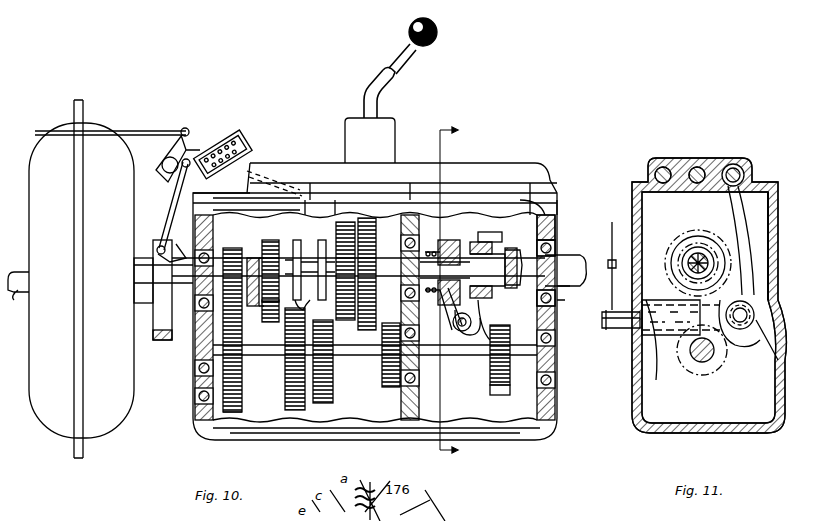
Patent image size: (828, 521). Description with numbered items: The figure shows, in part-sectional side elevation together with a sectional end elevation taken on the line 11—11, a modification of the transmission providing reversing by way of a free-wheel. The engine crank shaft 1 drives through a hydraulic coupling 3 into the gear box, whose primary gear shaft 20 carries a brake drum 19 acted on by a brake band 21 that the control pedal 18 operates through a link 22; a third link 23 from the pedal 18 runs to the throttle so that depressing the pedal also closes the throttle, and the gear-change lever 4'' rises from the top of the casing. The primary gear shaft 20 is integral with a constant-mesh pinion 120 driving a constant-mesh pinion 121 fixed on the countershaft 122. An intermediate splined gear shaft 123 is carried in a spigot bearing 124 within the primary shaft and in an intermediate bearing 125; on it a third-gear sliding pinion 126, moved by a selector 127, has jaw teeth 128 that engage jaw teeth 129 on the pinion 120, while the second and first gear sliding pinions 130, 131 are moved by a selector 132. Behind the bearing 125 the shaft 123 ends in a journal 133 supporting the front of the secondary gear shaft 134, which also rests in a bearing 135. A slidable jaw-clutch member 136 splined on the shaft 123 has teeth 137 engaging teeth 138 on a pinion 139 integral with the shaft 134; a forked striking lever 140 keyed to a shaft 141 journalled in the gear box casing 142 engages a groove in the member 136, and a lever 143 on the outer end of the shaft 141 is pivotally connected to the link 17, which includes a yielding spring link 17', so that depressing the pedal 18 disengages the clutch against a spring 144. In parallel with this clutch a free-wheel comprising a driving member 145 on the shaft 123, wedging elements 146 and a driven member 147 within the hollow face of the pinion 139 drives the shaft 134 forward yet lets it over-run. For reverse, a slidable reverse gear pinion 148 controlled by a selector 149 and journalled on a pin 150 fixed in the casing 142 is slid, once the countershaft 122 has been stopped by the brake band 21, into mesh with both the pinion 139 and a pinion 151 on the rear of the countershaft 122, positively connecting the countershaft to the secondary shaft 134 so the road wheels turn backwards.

In FIG. 10, the crank shaft 1 is at (14, 300).
In FIG. 10, the hydraulic coupling 3 is at (104, 432).
In FIG. 10, the shift lever 4'' is at (395, 90).
In FIG. 10, the section line 11 is at (458, 289).
In FIG. 10, the link 17 is at (274, 169).
In FIG. 10, the spring link 17' is at (225, 150).
In FIG. 10, the control pedal 18 is at (182, 130).
In FIG. 10, the brake drum 19 is at (168, 310).
In FIG. 10, the primary gear shaft 20 is at (145, 292).
In FIG. 10, the brake band 21 is at (163, 342).
In FIG. 10, the link 22 is at (178, 203).
In FIG. 10, the third link 23 is at (152, 131).
In FIG. 10, the constant-mesh pinion 120 is at (232, 248).
In FIG. 10, the constant-mesh pinion 121 is at (242, 405).
In FIG. 10, the countershaft 122 is at (285, 372).
In FIG. 11, the countershaft 122 is at (702, 362).
In FIG. 10, the intermediate splined gear shaft 123 is at (308, 242).
In FIG. 11, the intermediate splined gear shaft 123 is at (688, 258).
In FIG. 10, the spigot bearing 124 is at (270, 322).
In FIG. 10, the intermediate bearing 125 is at (412, 183).
In FIG. 10, the third-gear sliding pinion 126 is at (275, 235).
In FIG. 10, the selector 127 is at (305, 183).
In FIG. 11, the selector 127 is at (662, 167).
In FIG. 10, the jaw teeth 128 is at (240, 196).
In FIG. 10, the jaw teeth 129 is at (266, 336).
In FIG. 10, the second gear sliding pinion 130 is at (344, 222).
In FIG. 10, the first gear sliding pinion 131 is at (366, 218).
In FIG. 10, the selector 132 is at (336, 183).
In FIG. 11, the selector 132 is at (699, 167).
In FIG. 10, the journal 133 is at (545, 270).
In FIG. 10, the secondary gear shaft 134 is at (568, 296).
In FIG. 10, the bearing 135 is at (555, 310).
In FIG. 10, the slidable jaw-clutch member 136 is at (447, 240).
In FIG. 11, the slidable jaw-clutch member 136 is at (705, 245).
In FIG. 10, the teeth 137 is at (515, 248).
In FIG. 10, the teeth 138 is at (490, 360).
In FIG. 10, the pinion 139 is at (530, 183).
In FIG. 11, the pinion 139 is at (692, 248).
In FIG. 10, the forked striking lever 140 is at (452, 325).
In FIG. 11, the forked striking lever 140 is at (688, 310).
In FIG. 11, the shaft 141 is at (656, 375).
In FIG. 10, the gear box casing 142 is at (540, 425).
In FIG. 11, the gear box casing 142 is at (632, 375).
In FIG. 10, the lever 143 is at (480, 232).
In FIG. 11, the lever 143 is at (612, 222).
In FIG. 10, the spring 144 is at (430, 262).
In FIG. 10, the driving member 145 is at (555, 248).
In FIG. 10, the wedging elements 146 is at (555, 220).
In FIG. 10, the driven member 147 is at (557, 195).
In FIG. 11, the slidable reverse gear pinion 148 is at (790, 278).
In FIG. 11, the selector 149 is at (745, 232).
In FIG. 11, the pin 150 is at (775, 365).
In FIG. 10, the pinion 151 is at (490, 392).
In FIG. 11, the pinion 151 is at (735, 345).